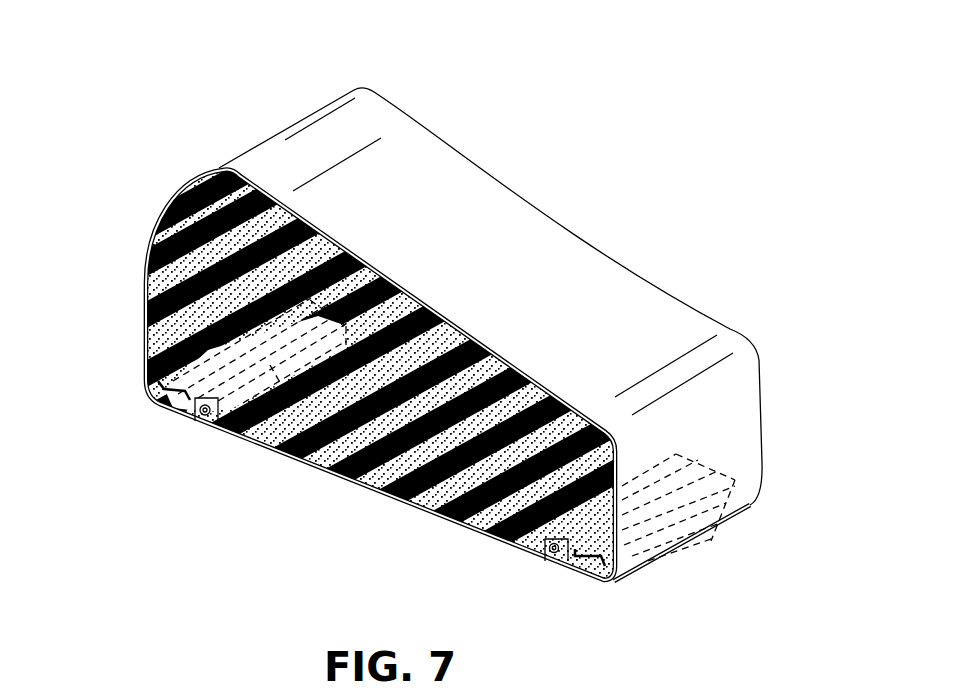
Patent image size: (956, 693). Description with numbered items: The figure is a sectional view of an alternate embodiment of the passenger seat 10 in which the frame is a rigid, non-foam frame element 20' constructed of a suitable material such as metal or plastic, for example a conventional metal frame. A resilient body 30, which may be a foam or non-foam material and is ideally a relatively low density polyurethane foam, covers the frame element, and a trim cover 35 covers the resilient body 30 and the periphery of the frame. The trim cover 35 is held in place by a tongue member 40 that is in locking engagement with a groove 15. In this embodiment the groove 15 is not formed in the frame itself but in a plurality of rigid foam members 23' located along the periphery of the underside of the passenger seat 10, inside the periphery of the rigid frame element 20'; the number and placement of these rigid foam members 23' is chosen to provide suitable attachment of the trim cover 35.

The passenger seat 10 is at (388, 73).
The groove 15 is at (200, 413).
The rigid, non-foam frame element 20' is at (344, 514).
The rigid foam members 23' is at (454, 429).
The resilient body 30 is at (265, 261).
The trim cover 35 is at (298, 123).
The tongue member 40 is at (191, 405).